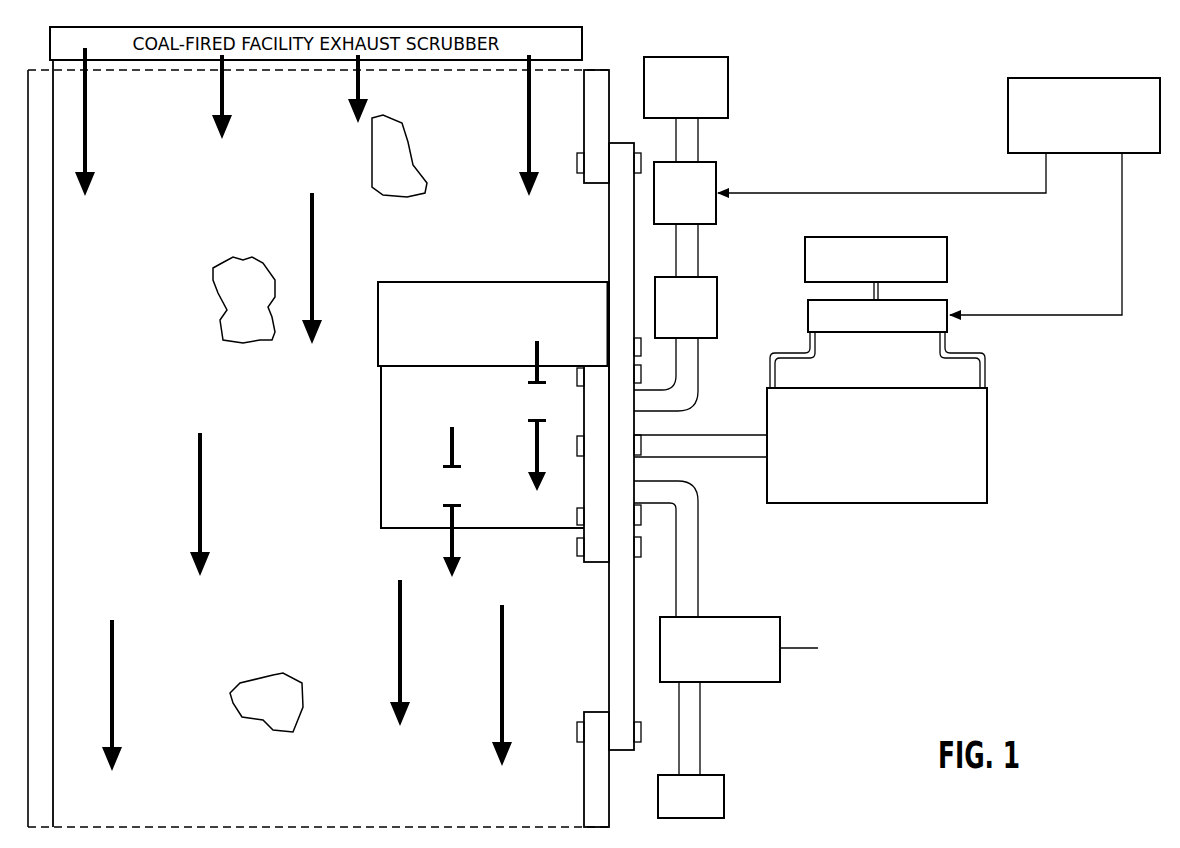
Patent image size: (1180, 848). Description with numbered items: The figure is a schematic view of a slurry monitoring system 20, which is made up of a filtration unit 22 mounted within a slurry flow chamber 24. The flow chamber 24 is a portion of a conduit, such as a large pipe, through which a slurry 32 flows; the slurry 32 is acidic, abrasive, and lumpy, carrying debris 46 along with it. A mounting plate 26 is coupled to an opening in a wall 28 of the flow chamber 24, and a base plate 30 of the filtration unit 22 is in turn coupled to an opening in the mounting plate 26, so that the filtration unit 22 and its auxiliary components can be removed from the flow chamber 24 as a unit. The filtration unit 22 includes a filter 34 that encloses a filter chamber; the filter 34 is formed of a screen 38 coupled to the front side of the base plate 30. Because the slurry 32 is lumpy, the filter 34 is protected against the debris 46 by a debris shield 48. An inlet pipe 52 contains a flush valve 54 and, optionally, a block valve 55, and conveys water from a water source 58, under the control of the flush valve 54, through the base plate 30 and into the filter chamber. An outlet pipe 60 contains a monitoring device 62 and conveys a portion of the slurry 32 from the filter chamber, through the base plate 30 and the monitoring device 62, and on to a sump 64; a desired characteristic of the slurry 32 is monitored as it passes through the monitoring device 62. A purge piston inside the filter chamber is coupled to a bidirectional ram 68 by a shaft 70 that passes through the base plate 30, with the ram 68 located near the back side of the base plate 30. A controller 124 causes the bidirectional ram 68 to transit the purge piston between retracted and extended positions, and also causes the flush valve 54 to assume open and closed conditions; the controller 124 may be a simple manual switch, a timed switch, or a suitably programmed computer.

The slurry monitoring system 20 is at (1007, 674).
The filtration unit 22 is at (372, 527).
The slurry flow chamber 24 is at (245, 410).
The mounting plate 26 is at (622, 273).
The wall 28 is at (593, 119).
The base plate 30 is at (598, 553).
The slurry 32 is at (312, 240).
The filter 34 is at (472, 465).
The screen 38 is at (392, 397).
The debris 46 is at (398, 150).
The debris shield 48 is at (520, 290).
The inlet pipe 52 is at (692, 383).
The flush valve 54 is at (713, 168).
The block valve 55 is at (717, 285).
The water source 58 is at (727, 87).
The outlet pipe 60 is at (695, 583).
The monitoring device 62 is at (777, 623).
The sump 64 is at (723, 785).
The bidirectional ram 68 is at (980, 448).
The shaft 70 is at (717, 438).
The controller 124 is at (1015, 100).